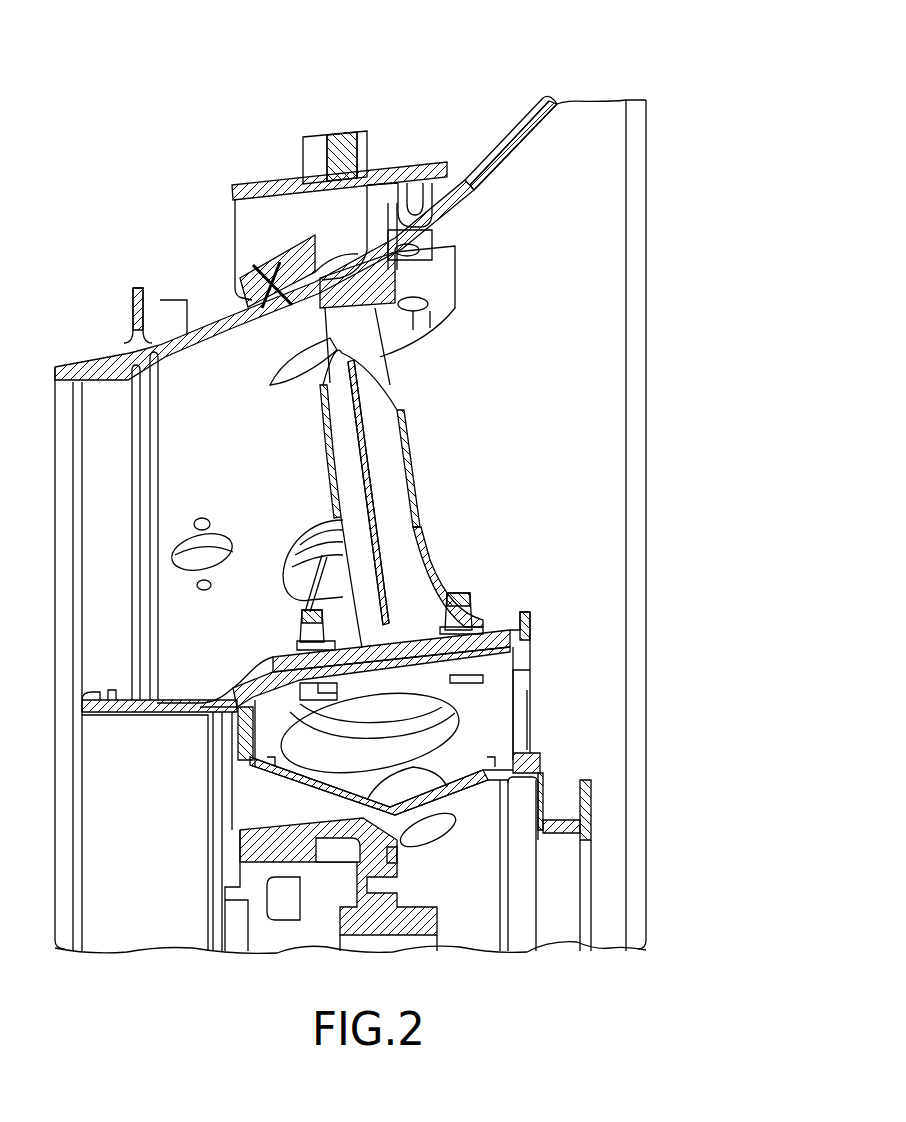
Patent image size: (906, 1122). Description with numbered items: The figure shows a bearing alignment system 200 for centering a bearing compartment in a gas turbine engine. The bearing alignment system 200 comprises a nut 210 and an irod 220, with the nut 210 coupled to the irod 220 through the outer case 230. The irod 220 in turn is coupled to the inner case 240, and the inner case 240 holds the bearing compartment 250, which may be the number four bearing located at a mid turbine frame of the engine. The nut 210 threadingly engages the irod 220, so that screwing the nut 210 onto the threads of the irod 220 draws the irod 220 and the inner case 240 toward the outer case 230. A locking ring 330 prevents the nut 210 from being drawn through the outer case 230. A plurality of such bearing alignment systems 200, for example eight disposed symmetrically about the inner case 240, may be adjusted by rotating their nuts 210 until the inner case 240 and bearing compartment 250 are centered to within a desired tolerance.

The bearing alignment system 200 is at (224, 78).
The nut 210 is at (372, 145).
The irod 220 is at (405, 455).
The outer case 230 is at (552, 100).
The inner case 240 is at (533, 630).
The bearing compartment 250 is at (543, 757).
The locking ring 330 is at (252, 182).